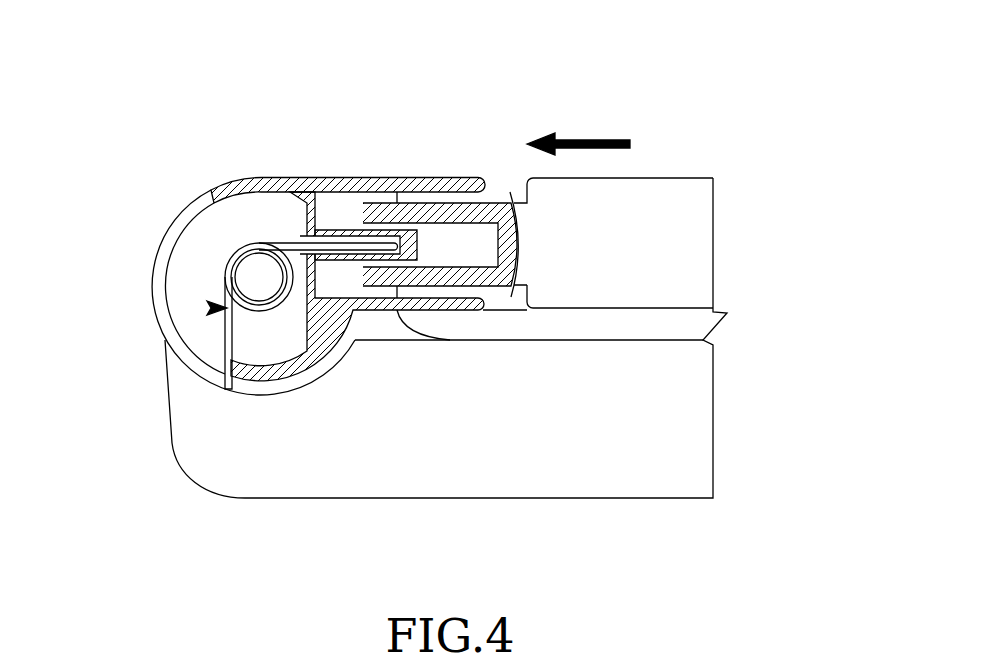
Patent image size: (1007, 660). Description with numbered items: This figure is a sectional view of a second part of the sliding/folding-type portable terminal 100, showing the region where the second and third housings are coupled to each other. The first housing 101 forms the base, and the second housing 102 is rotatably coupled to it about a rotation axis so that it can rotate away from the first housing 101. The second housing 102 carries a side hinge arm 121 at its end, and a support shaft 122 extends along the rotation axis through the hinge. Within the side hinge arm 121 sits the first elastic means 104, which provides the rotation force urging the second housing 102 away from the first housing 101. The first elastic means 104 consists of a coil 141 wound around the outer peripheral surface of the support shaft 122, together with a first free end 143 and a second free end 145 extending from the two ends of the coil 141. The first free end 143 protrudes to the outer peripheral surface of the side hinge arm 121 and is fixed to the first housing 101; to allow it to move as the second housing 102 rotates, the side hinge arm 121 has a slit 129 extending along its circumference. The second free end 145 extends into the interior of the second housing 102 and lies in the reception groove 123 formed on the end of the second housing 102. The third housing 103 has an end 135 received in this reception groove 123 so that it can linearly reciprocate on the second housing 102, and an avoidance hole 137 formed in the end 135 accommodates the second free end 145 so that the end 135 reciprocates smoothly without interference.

The terminal 100 is at (389, 33).
The first housing 101 is at (516, 498).
The second housing 102 is at (208, 170).
The third housing 103 is at (648, 170).
The first elastic means 104 is at (210, 308).
The side hinge arm 121 is at (255, 177).
The support shaft 122 is at (243, 280).
The reception groove 123 is at (405, 230).
The slit 129 is at (168, 247).
The end of the third housing 135 is at (467, 213).
The avoidance hole 137 is at (445, 237).
The coil 141 is at (232, 252).
The first free end 143 is at (227, 340).
The second free end 145 is at (340, 241).